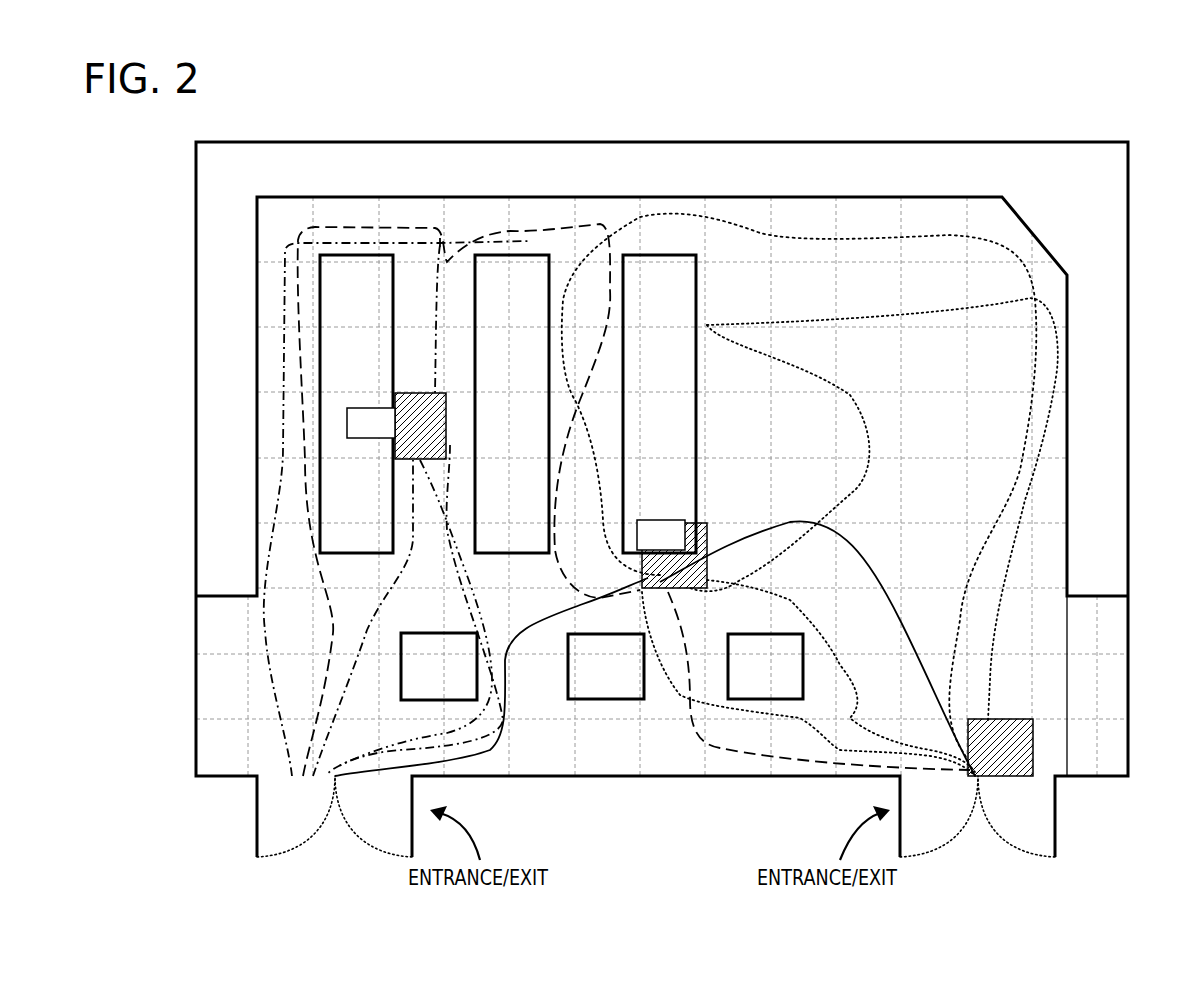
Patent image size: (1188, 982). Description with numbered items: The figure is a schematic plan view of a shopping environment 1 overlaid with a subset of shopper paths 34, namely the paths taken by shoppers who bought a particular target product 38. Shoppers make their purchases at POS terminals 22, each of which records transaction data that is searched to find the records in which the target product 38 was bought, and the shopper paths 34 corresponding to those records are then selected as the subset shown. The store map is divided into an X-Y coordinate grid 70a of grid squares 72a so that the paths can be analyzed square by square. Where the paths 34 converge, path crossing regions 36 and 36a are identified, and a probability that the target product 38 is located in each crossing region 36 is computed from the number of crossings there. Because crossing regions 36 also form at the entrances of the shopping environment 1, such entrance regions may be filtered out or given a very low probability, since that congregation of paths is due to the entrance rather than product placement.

The shopping environment 1 is at (212, 142).
The shopper paths 34 is at (735, 235).
The crossing region 36a is at (425, 392).
The path crossing region 36 is at (700, 590).
The target product 38 is at (516, 479).
The POS terminal 22 is at (602, 666).
The X-Y coordinate grid 70a is at (1112, 640).
The grid square 72a is at (1100, 685).